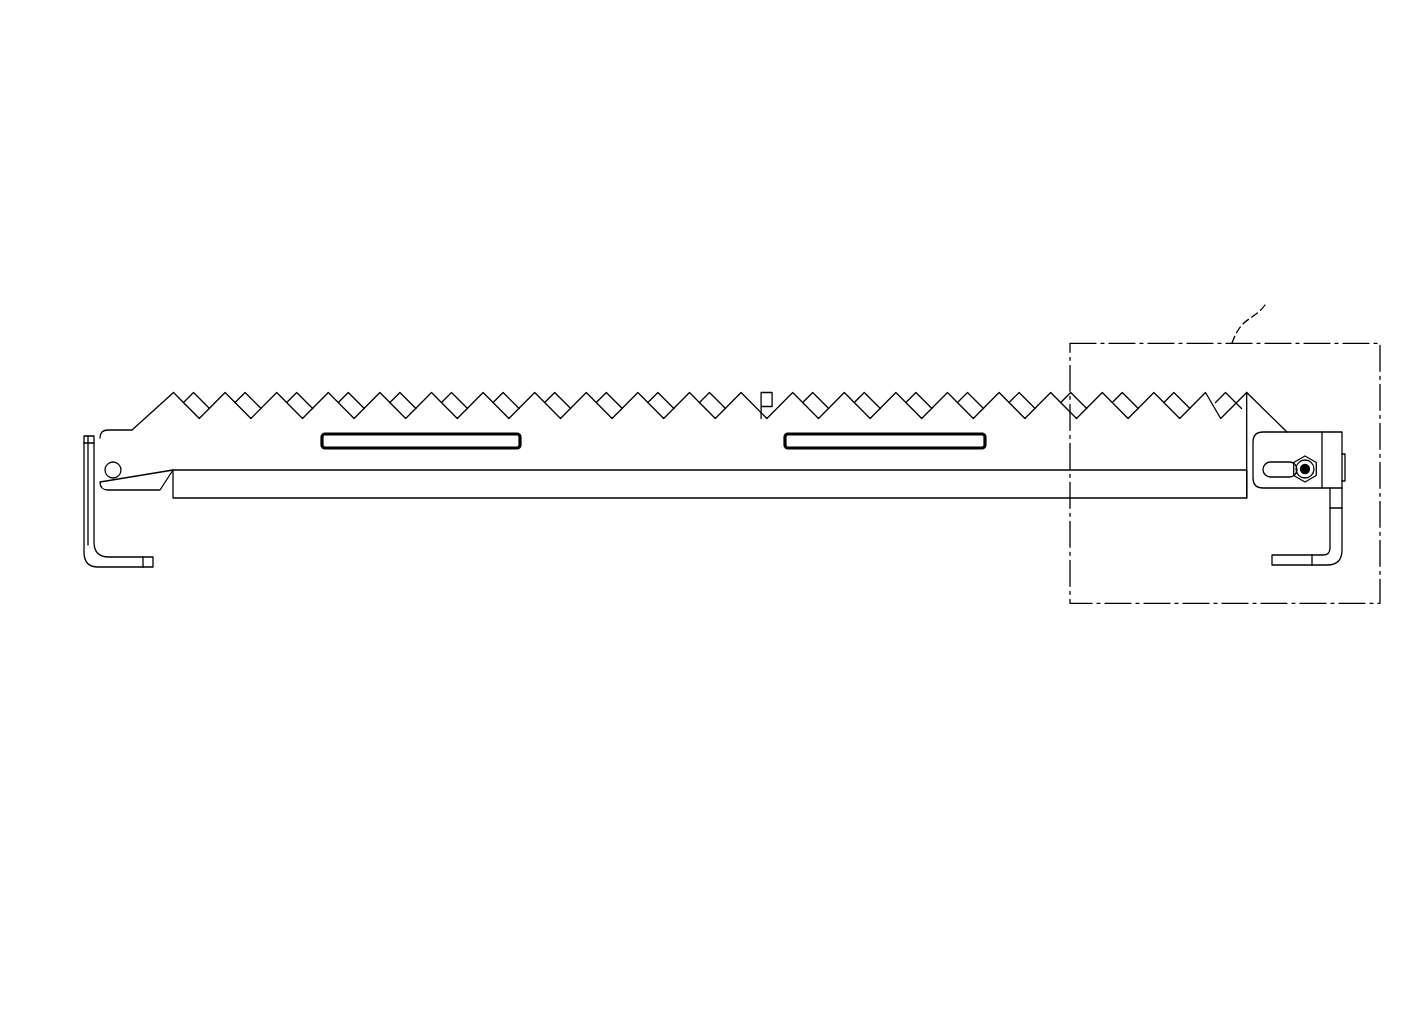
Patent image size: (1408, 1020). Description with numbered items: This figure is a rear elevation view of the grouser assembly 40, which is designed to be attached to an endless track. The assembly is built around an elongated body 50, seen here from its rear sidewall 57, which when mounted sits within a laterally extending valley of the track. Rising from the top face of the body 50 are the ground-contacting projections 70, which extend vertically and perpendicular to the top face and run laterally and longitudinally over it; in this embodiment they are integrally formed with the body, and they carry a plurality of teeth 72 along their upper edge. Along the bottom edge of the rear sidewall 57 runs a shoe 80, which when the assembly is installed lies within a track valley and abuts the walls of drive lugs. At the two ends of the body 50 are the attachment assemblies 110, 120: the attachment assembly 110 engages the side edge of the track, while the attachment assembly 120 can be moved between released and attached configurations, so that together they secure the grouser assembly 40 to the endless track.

The grouser assembly 40 is at (176, 205).
The body 50 is at (175, 449).
The rear sidewall 57 is at (583, 434).
The ground-contacting projections 70 is at (688, 420).
The teeth 72 is at (683, 409).
The shoes 80 is at (870, 484).
The attachment assembly 110 is at (77, 470).
The attachment assembly 120 is at (1344, 530).